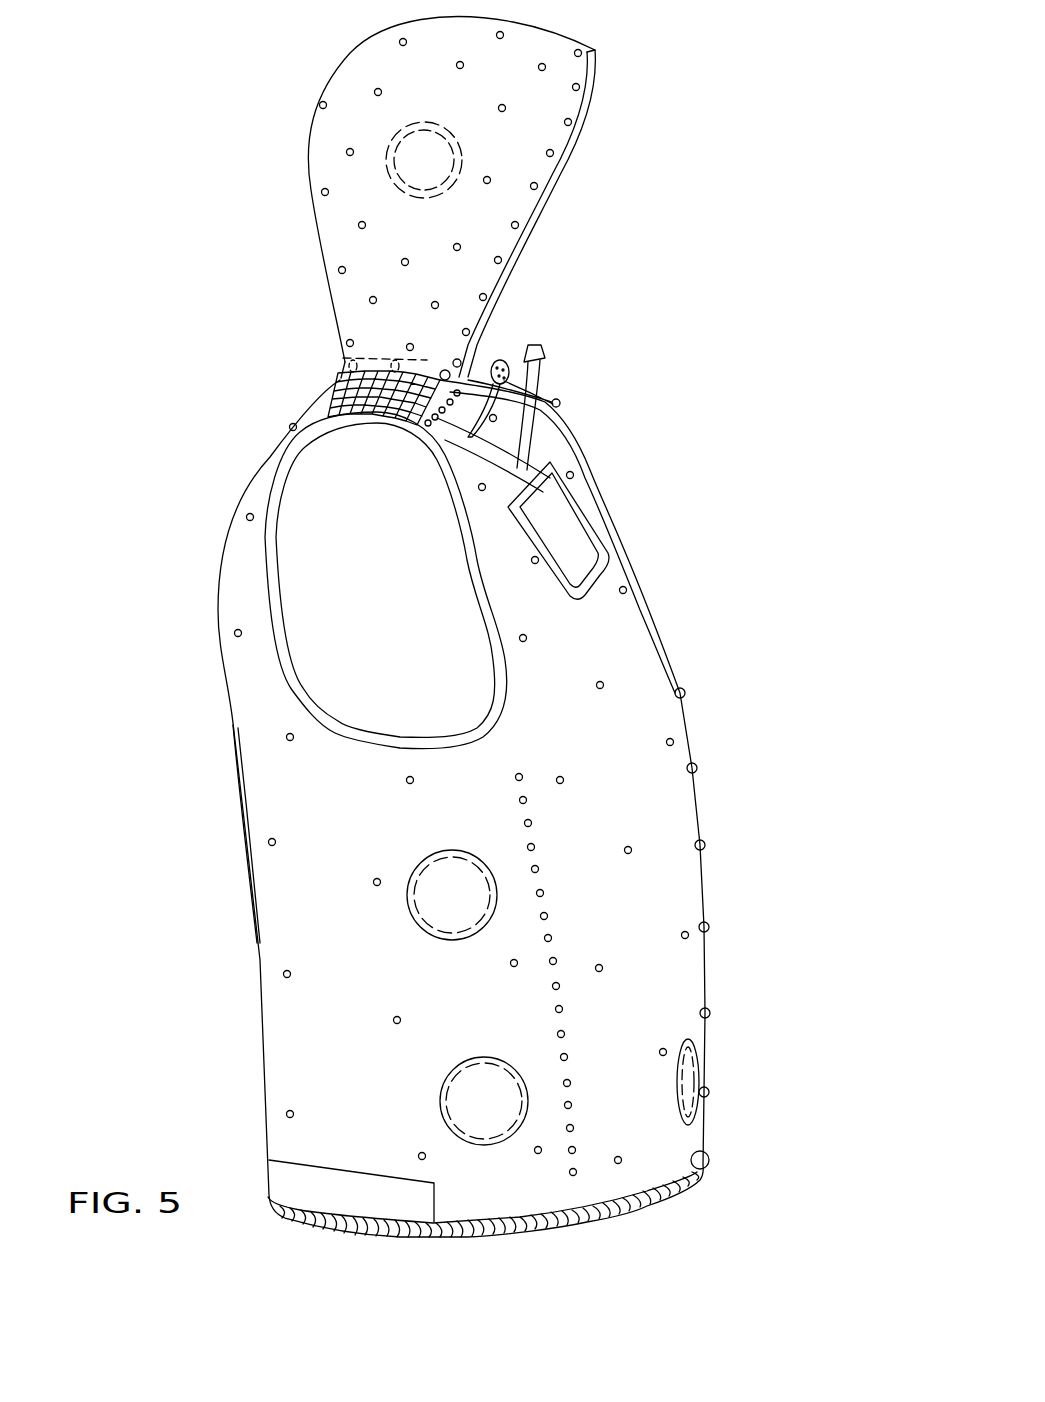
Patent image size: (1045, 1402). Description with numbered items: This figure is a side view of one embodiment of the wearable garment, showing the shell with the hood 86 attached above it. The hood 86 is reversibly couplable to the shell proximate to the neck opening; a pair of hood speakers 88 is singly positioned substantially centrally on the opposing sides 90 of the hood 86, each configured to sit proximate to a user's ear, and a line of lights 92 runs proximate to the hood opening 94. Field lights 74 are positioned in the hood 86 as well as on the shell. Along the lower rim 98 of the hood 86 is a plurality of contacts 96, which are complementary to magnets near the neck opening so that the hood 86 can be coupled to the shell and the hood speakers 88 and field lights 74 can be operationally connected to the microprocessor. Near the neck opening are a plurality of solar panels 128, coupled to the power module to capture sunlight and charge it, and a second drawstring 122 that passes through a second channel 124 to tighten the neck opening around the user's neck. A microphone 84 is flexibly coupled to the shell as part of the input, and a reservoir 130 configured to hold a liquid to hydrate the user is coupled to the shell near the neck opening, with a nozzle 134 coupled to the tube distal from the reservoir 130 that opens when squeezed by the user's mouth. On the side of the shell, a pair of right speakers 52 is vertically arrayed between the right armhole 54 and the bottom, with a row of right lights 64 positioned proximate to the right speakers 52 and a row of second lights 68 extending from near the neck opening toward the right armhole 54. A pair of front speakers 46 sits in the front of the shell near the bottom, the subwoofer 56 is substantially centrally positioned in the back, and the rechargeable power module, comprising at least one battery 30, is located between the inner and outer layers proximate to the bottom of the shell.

The battery 30 is at (288, 1184).
The front speakers 46 is at (705, 1080).
The right speakers 52 is at (436, 909).
The right armhole 54 is at (352, 552).
The subwoofer 56 is at (228, 837).
The row of right lights 64 is at (580, 1182).
The row of second lights 68 is at (442, 434).
The field lights 74 is at (370, 92).
The microphone 84 is at (508, 352).
The hood 86 is at (340, 50).
The hood speakers 88 is at (398, 163).
The opposing sides 90 is at (525, 108).
The line of lights 92 is at (548, 181).
The hood opening 94 is at (558, 208).
The contacts 96 is at (383, 373).
The lower rim 98 is at (432, 352).
The second drawstring 122 is at (570, 399).
The second channel 124 is at (440, 368).
The solar panels 128 is at (350, 401).
The reservoir 130 is at (583, 530).
The nozzle 134 is at (550, 356).